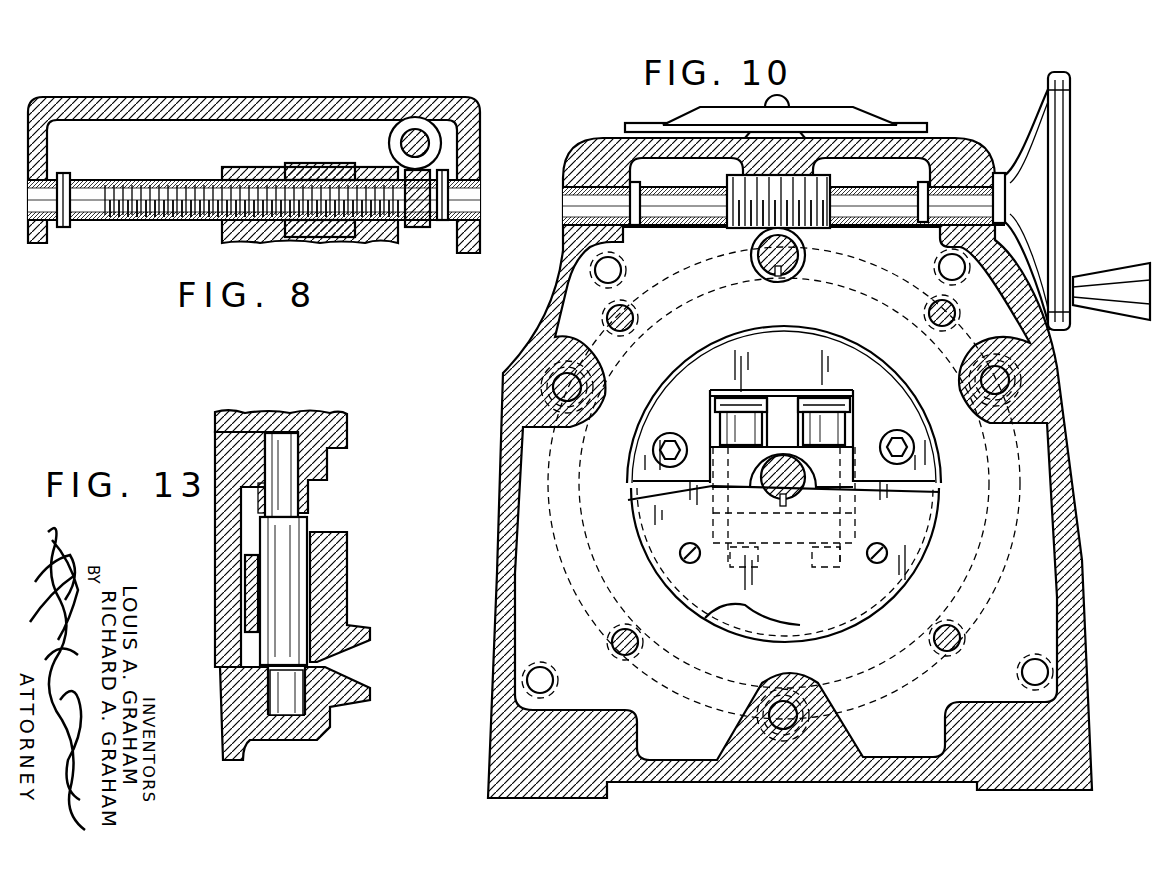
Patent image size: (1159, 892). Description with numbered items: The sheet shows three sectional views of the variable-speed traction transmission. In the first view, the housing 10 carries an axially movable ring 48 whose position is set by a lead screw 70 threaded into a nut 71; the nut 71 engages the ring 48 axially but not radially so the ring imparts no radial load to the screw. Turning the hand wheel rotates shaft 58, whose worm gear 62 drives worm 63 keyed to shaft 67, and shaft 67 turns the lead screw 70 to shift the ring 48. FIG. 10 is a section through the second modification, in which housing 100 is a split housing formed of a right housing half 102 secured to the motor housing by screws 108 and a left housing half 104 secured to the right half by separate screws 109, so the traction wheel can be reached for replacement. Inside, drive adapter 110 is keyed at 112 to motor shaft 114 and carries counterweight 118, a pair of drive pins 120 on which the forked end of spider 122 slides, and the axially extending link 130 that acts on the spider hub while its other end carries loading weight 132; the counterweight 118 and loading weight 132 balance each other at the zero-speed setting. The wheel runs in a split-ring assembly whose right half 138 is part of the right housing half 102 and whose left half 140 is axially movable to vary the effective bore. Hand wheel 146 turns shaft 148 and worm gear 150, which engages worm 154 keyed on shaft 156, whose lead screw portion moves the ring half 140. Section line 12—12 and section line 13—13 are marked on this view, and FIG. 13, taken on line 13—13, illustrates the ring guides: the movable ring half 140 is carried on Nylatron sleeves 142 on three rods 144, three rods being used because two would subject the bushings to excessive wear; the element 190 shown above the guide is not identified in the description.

In FIG. 8, the housing 10 is at (340, 100).
In FIG. 8, the axially movable ring 48 is at (222, 235).
In FIG. 8, the shaft 58 is at (415, 129).
In FIG. 8, the worm gear 62 is at (440, 140).
In FIG. 8, the worm 63 is at (418, 228).
In FIG. 8, the shaft 67 is at (470, 200).
In FIG. 8, the lead screw 70 is at (157, 185).
In FIG. 8, the nut 71 is at (318, 165).
In FIG. 10, the housing 100 is at (485, 653).
In FIG. 13, the housing half 102 is at (232, 720).
In FIG. 10, the housing half 102 is at (497, 535).
In FIG. 13, the left hand housing half 104 is at (232, 447).
In FIG. 10, the screws 108 is at (613, 321).
In FIG. 10, the screws 109 is at (606, 270).
In FIG. 10, the drive adapter 110 is at (737, 463).
In FIG. 10, the key 112 is at (723, 514).
In FIG. 10, the motor shaft 114 is at (845, 515).
In FIG. 10, the counterweight 118 is at (727, 632).
In FIG. 10, the drive pins 120 is at (723, 432).
In FIG. 10, the spider 122 is at (853, 410).
In FIG. 10, the axially extending link 130 is at (752, 331).
In FIG. 10, the loading weight 132 is at (883, 377).
In FIG. 13, the right half of split-ring 138 is at (350, 683).
In FIG. 10, the right half of split-ring 138 is at (812, 333).
In FIG. 13, the left half of split-ring 140 is at (357, 627).
In FIG. 10, the left half of split-ring 140 is at (665, 312).
In FIG. 13, the Nylatron sleeves 142 is at (288, 533).
In FIG. 10, the Nylatron sleeves 142 is at (567, 487).
In FIG. 13, the rods 144 is at (285, 455).
In FIG. 10, the rods 144 is at (540, 425).
In FIG. 10, the hand wheel 146 is at (1048, 93).
In FIG. 10, the shaft 148 is at (953, 197).
In FIG. 10, the worm gear 150 is at (727, 180).
In FIG. 10, the worm 154 is at (752, 252).
In FIG. 10, the shaft 156 is at (783, 410).
In FIG. 13, the cover plate 190 is at (303, 413).
In FIG. 10, the section line 12- 12 is at (587, 480).
In FIG. 10, the section line 13- 13 is at (473, 413).